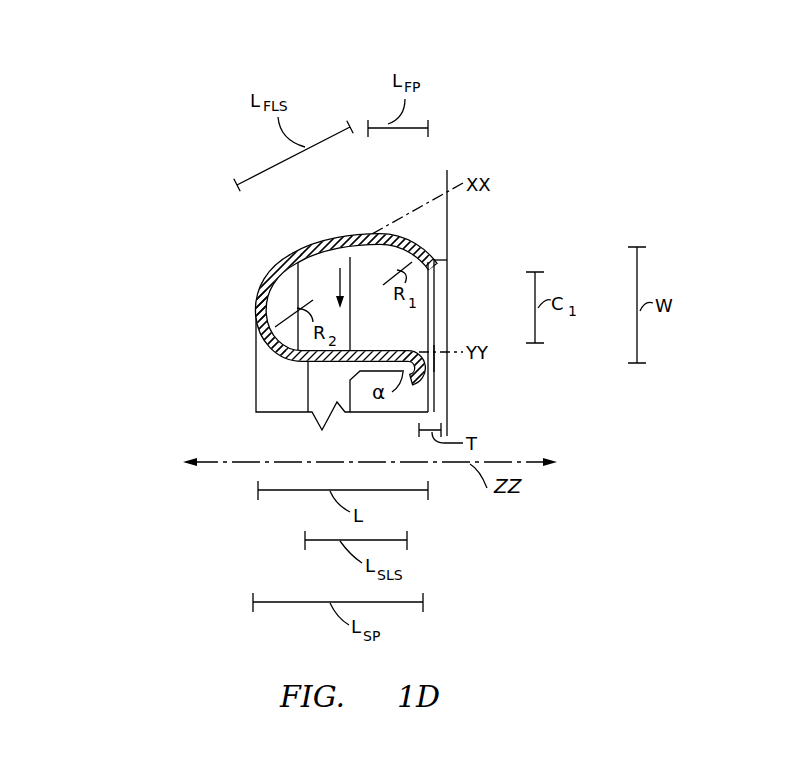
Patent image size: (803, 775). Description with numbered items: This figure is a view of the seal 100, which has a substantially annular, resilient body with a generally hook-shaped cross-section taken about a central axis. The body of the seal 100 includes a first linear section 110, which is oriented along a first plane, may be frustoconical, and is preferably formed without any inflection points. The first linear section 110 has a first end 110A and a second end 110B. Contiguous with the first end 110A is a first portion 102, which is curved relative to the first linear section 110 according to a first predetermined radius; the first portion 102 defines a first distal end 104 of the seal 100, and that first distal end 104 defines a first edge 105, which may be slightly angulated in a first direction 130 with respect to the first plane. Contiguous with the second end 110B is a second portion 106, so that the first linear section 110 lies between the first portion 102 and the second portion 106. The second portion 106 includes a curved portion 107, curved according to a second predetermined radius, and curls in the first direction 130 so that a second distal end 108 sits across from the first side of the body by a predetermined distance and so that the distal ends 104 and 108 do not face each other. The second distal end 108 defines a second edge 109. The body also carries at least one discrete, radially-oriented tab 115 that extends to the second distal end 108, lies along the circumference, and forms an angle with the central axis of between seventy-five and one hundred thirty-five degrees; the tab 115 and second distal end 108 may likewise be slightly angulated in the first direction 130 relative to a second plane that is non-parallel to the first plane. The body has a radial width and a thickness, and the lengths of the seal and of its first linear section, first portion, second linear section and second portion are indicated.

The seal 100 is at (323, 283).
The first portion 102 is at (413, 247).
The first distal end 104 is at (435, 260).
The first edge 105 is at (433, 267).
The second portion 106 is at (258, 320).
The curved portion 107 is at (257, 305).
The second distal end 108 is at (432, 358).
The second edge 109 is at (419, 386).
The first linear section 110 is at (324, 258).
The first end of the first linear section 110A is at (365, 240).
The second end of the first linear section 110B is at (280, 270).
The radially-oriented tab 115 is at (423, 377).
The first direction 130 is at (343, 283).